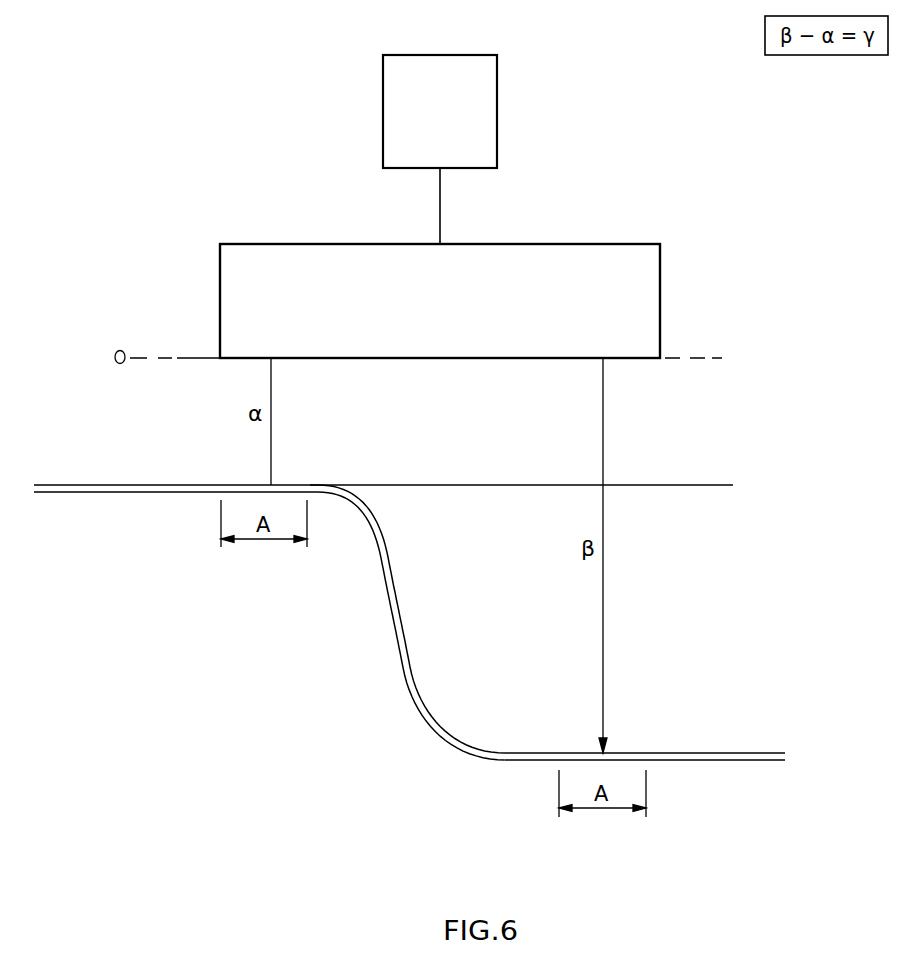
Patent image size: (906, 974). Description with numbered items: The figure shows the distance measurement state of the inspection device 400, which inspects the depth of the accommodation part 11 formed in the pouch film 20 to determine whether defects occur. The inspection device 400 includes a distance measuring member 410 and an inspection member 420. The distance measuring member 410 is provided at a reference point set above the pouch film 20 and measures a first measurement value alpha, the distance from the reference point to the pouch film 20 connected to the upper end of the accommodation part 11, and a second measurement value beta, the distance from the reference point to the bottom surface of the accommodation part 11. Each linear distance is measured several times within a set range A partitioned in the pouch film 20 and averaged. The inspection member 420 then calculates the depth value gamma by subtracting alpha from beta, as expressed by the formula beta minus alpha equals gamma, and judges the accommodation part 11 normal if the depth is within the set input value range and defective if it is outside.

The inspection device 400 is at (465, 206).
The distance measuring member 410 is at (613, 244).
The inspection member 420 is at (497, 109).
The pouch film 20 is at (80, 485).
The accommodation part 11 is at (735, 762).